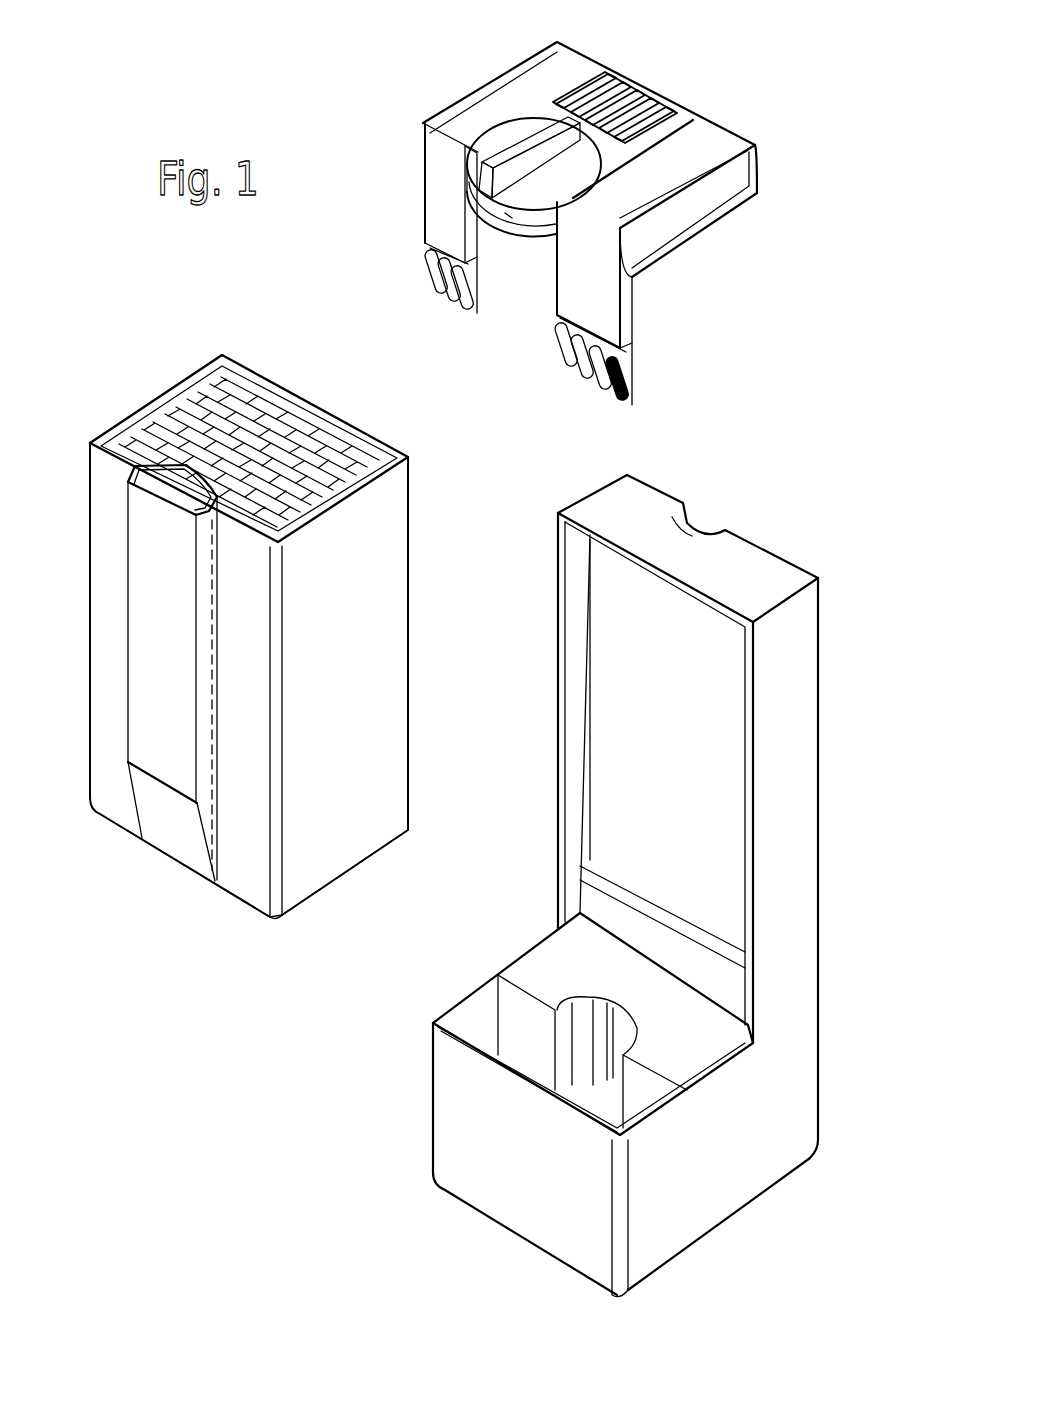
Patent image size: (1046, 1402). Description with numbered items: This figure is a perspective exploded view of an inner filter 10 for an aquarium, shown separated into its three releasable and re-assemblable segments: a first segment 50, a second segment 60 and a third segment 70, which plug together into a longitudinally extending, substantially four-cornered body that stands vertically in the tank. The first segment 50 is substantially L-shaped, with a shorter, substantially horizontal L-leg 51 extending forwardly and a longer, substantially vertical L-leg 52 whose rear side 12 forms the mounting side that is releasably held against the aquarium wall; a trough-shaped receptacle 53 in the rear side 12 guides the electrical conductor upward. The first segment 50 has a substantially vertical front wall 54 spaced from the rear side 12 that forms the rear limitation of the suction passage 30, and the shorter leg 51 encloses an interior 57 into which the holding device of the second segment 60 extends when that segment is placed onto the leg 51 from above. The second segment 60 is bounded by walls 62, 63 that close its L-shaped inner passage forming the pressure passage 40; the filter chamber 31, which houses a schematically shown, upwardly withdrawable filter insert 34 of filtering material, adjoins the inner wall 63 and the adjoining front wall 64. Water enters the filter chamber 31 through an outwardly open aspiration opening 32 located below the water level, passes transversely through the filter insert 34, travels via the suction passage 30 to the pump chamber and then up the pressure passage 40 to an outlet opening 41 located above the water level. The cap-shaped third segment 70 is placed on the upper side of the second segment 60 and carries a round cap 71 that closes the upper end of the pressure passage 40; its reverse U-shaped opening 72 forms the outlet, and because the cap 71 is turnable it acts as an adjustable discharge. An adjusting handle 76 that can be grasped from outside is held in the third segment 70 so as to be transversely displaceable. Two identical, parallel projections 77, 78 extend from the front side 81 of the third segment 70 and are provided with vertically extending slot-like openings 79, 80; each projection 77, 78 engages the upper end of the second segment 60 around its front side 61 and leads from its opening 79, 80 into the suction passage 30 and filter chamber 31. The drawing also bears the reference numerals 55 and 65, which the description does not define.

The inner filter 10 is at (310, 1069).
The rear side 12 is at (793, 558).
The suction passage 30 is at (348, 443).
The filter chamber 31 is at (110, 437).
The aspiration opening 32 is at (455, 318).
The filter insert 34 is at (310, 487).
The pressure passage 40 is at (147, 487).
The outlet opening 41 is at (507, 215).
The first segment 50 is at (828, 1083).
The shorter L-leg 51 is at (480, 1160).
The longer L-leg 52 is at (819, 651).
The trough-shaped receptacle 53 is at (700, 525).
The front wall 54 is at (636, 828).
The ledge 55 is at (635, 945).
The interior 57 is at (603, 1078).
The second segment 60 is at (221, 904).
The front side 61 is at (107, 473).
The wall 62 is at (168, 692).
The inner wall 63 is at (190, 480).
The front wall 64 is at (110, 643).
The side wall 65 is at (188, 380).
The third segment 70 is at (767, 169).
The round cap 71 is at (495, 143).
The opening 72 is at (470, 182).
The adjusting handle 76 is at (620, 82).
The projection 77 is at (428, 223).
The projection 78 is at (607, 327).
The opening 79 is at (438, 296).
The opening 80 is at (625, 393).
The front side 81 is at (435, 150).